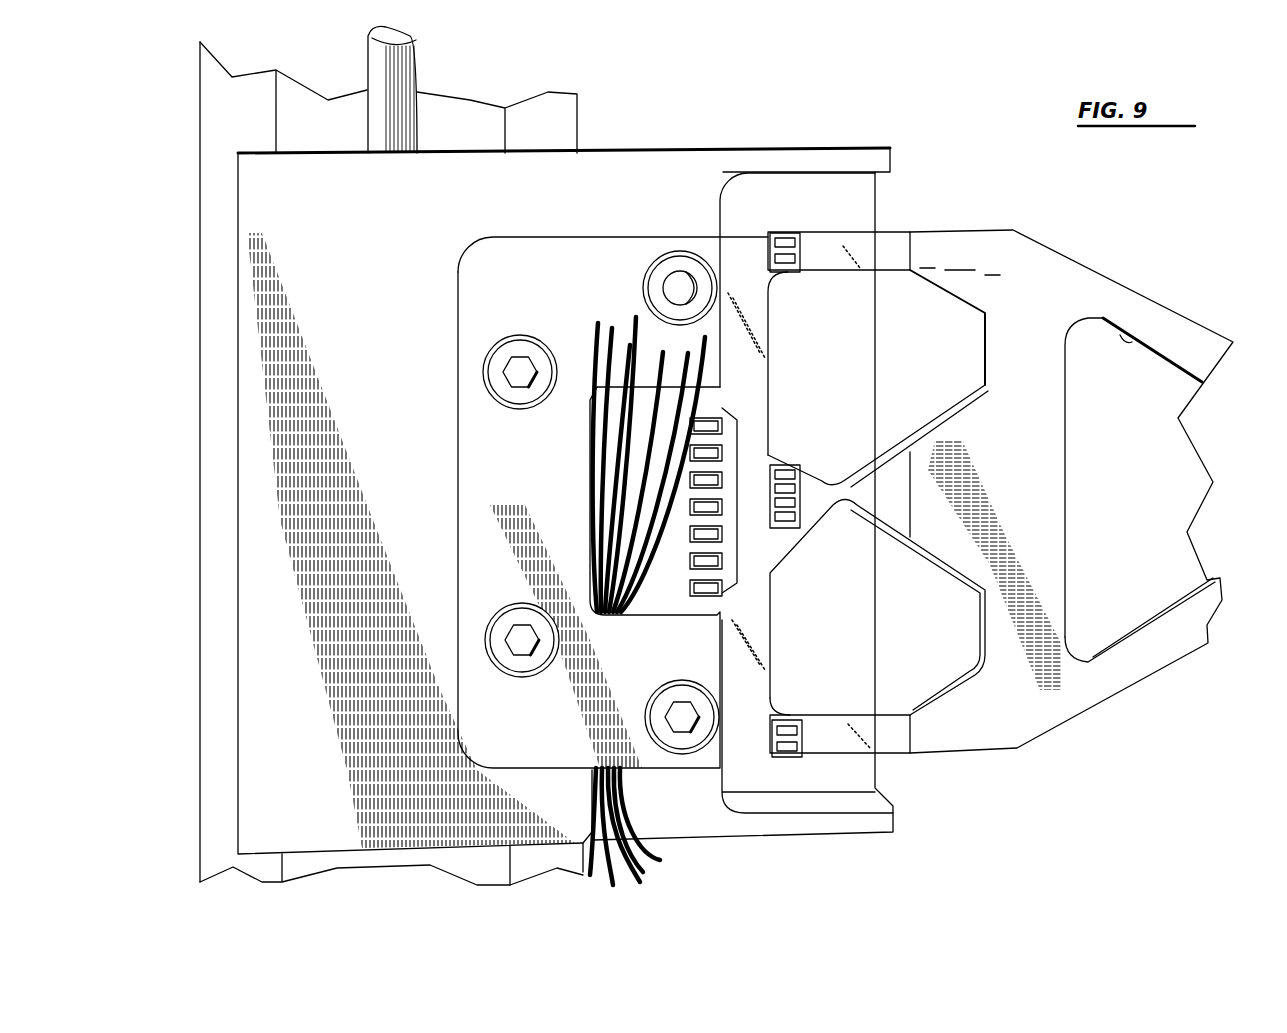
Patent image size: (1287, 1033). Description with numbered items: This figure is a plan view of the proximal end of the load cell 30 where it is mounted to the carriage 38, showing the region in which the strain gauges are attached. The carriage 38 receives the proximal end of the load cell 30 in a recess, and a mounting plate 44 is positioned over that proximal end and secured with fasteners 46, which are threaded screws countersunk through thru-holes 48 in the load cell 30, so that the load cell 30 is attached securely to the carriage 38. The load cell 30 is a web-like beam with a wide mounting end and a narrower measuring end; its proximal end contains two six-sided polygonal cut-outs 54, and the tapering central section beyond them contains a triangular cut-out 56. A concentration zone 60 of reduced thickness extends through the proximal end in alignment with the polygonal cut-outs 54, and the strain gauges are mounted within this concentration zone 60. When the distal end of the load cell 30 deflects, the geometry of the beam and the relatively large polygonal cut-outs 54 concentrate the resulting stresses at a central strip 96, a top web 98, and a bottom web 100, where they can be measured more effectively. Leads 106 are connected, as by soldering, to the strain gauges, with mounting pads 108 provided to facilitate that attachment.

The load cell 30 is at (1228, 330).
The carriage 38 is at (267, 223).
The mounting plate 44 is at (557, 295).
The fasteners 46 is at (520, 375).
The thru-holes 48 is at (683, 292).
The polygonal cut-outs 54 is at (812, 716).
The triangular cut-out 56 is at (1123, 340).
The concentration zone 60 is at (825, 255).
The central strip 96 is at (875, 497).
The top web 98 is at (852, 240).
The bottom web 100 is at (888, 745).
The leads 106 is at (598, 337).
The mounting pads 108 is at (795, 258).